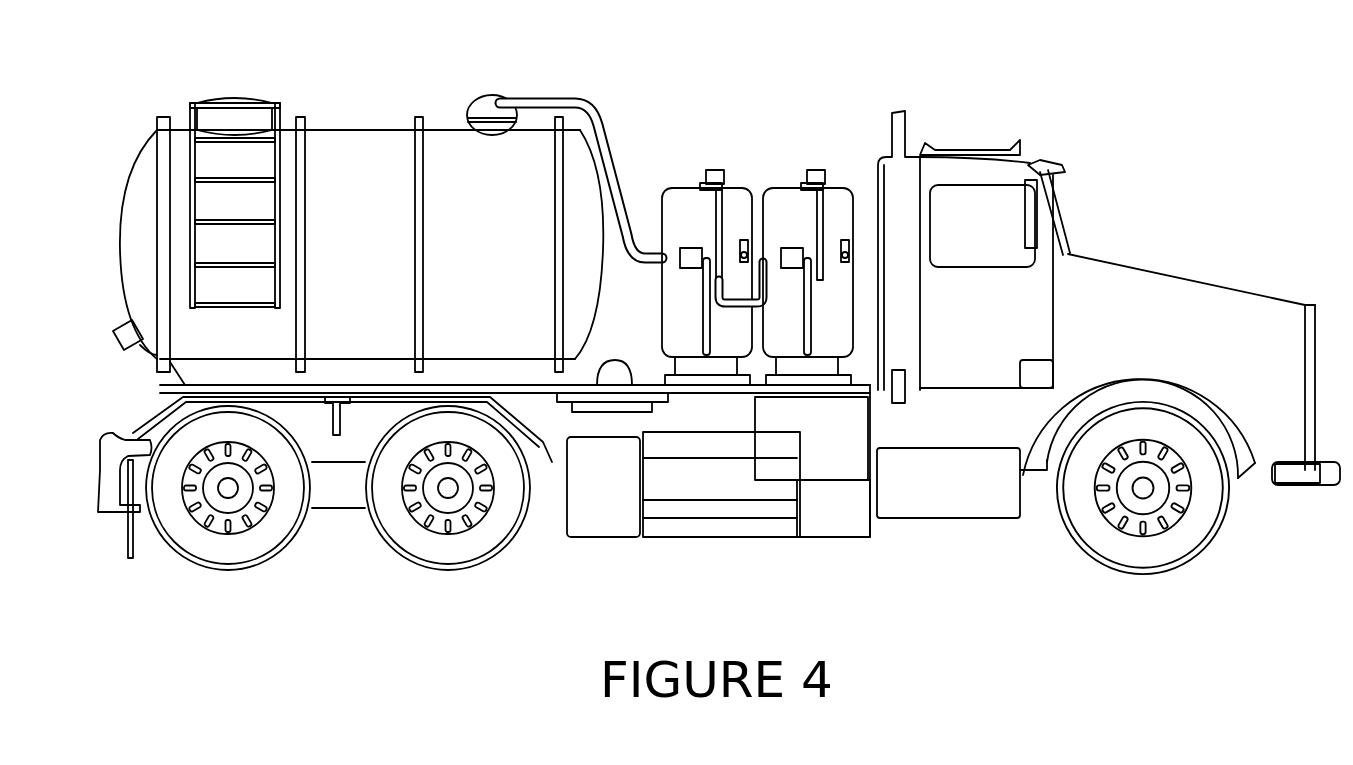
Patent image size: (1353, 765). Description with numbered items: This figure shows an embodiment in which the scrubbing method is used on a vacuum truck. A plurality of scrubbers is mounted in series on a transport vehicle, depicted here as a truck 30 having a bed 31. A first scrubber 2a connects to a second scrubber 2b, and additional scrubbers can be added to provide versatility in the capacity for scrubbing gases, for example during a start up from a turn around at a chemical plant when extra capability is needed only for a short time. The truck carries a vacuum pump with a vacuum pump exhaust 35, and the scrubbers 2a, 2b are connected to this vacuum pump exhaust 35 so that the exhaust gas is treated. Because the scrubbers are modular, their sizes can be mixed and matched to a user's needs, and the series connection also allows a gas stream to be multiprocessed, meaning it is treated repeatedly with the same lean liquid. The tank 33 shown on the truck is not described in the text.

The tank 33 is at (365, 173).
The vacuum pump exhaust 35 is at (492, 107).
The first scrubber 2a is at (692, 207).
The second scrubber 2b is at (793, 207).
The bed 31 is at (593, 370).
The truck 30 is at (1147, 298).